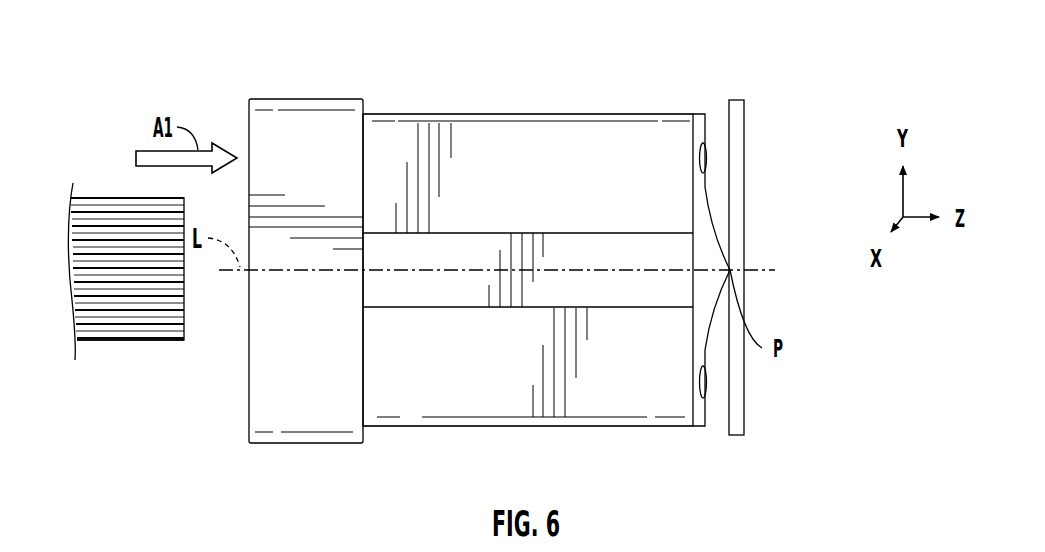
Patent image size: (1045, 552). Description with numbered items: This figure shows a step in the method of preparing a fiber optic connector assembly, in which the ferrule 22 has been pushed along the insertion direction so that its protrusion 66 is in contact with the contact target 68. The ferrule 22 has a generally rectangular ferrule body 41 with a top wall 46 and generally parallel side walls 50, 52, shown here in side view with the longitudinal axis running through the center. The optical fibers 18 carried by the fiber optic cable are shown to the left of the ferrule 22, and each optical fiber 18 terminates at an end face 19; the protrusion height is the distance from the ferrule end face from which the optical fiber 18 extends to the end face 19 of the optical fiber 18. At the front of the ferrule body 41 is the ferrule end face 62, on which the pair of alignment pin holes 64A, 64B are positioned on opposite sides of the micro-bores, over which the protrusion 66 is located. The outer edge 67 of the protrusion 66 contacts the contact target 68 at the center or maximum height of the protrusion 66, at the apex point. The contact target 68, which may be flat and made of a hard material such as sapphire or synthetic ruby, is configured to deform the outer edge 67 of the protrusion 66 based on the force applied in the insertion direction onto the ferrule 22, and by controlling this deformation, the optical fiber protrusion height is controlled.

The optical fiber 18 is at (112, 198).
The end face of optical fiber 19 is at (184, 339).
The ferrule 22 is at (234, 65).
The ferrule body 41 is at (578, 66).
The top wall 46 is at (518, 200).
The side wall 50 is at (537, 112).
The side wall 52 is at (535, 428).
The ferrule end face 62 is at (714, 424).
The alignment pin hole 64A is at (696, 380).
The alignment pin hole 64B is at (696, 156).
The protrusion 66 is at (717, 180).
The outer edge of protrusion 67 is at (715, 333).
The contact target 68 is at (745, 185).